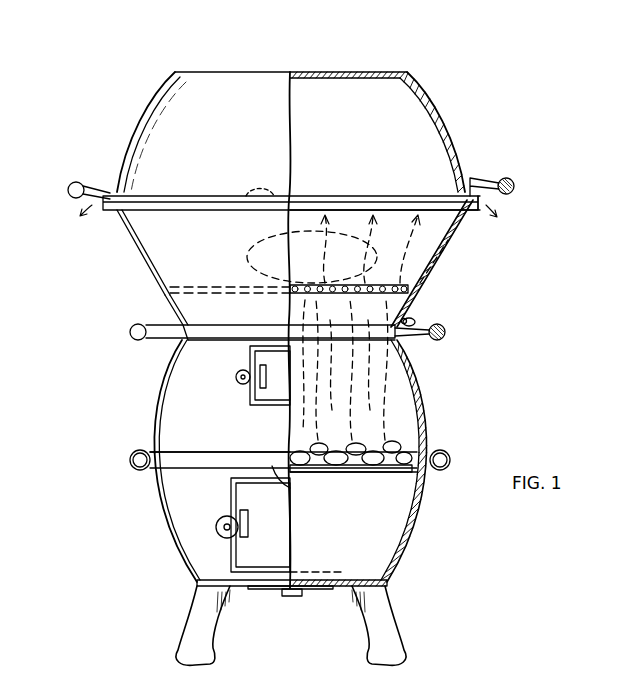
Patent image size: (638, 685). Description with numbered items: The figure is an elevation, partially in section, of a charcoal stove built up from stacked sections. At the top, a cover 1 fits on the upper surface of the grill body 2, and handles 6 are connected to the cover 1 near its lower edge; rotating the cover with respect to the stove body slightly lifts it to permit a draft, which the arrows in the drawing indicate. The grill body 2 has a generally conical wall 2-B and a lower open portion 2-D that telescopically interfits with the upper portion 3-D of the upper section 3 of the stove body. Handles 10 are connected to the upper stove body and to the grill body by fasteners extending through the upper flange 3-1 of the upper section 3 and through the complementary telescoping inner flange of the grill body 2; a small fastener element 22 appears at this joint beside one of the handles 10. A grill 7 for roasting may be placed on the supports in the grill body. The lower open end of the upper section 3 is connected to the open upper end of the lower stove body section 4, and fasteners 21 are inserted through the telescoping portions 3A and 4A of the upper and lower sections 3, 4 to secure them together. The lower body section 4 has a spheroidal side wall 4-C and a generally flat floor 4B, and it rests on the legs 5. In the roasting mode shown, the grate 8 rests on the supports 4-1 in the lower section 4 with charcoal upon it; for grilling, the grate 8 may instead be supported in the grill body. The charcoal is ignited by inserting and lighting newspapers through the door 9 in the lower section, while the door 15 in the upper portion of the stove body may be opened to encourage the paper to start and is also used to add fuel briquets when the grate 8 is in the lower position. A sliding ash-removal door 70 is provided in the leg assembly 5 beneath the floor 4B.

The cover 1 is at (372, 72).
The grill body 2 is at (155, 222).
The conical wall 2-B is at (461, 224).
The lower open portion 2-D is at (195, 335).
The upper section of the stove body 3 is at (398, 405).
The upper flange 3-1 is at (303, 335).
The upper portion 3-D is at (227, 343).
The telescoping portion 3A is at (220, 454).
The lower stove body section 4 is at (390, 535).
The supports 4-1 is at (413, 483).
The telescoping portion 4A is at (288, 488).
The floor 4B is at (367, 575).
The spheroidal side wall 4-C is at (422, 510).
The legs 5 is at (210, 632).
The handles 6 is at (76, 182).
The grill 7 is at (388, 296).
The grate 8 is at (342, 464).
The door 9 is at (265, 528).
The handles 10 is at (140, 325).
The door 15 is at (250, 374).
The fasteners 21 is at (143, 454).
The clamp fastener 22 is at (413, 322).
The sliding ash-removal door 70 is at (293, 584).